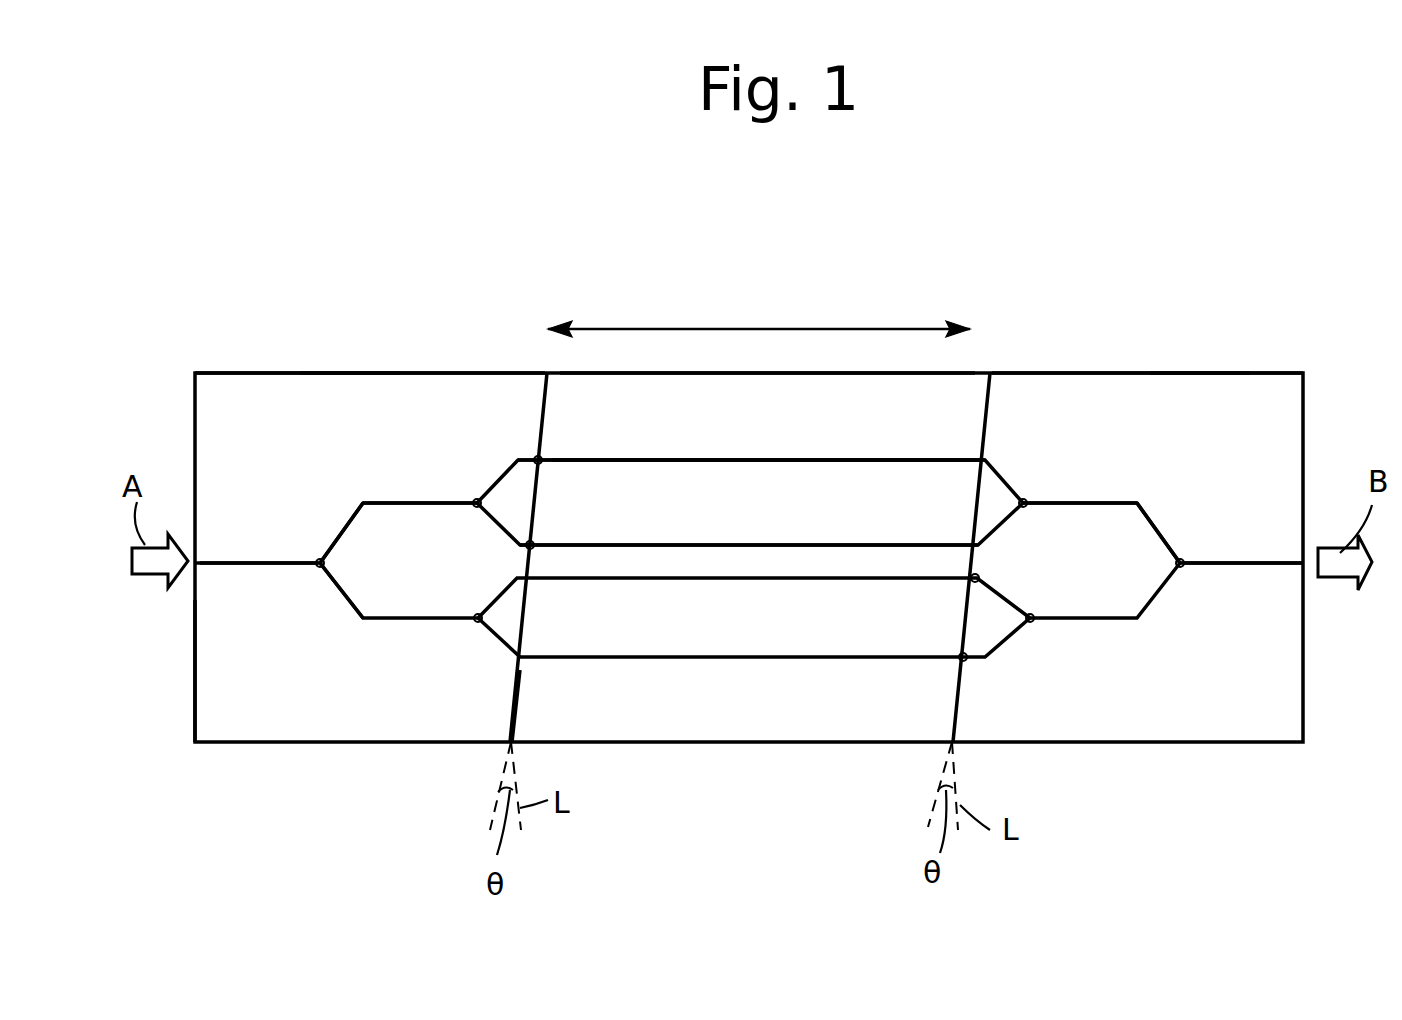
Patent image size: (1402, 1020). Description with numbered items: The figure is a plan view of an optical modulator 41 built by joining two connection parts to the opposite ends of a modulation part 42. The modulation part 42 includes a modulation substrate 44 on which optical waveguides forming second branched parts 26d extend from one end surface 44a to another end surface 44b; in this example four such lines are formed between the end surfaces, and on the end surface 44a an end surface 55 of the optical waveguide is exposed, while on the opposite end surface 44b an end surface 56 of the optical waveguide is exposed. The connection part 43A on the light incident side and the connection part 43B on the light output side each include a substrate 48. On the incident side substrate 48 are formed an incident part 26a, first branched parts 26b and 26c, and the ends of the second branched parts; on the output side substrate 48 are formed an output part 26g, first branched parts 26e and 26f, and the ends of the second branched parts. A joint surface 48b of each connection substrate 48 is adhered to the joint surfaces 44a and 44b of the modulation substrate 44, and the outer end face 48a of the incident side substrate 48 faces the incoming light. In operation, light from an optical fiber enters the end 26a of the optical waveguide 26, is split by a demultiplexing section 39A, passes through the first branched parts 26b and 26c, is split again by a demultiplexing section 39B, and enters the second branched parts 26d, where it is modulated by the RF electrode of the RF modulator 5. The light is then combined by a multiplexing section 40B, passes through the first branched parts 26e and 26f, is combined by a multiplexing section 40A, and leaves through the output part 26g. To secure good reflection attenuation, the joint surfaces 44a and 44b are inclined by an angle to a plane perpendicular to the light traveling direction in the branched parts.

The RF modulator 5 is at (860, 328).
The optical waveguide 26 is at (308, 530).
The incident part 26a is at (243, 560).
The first branched part 26b is at (344, 527).
The first branched part 26c is at (407, 500).
The second branched parts 26d is at (757, 545).
The first branched part 26e is at (1095, 500).
The first branched part 26f is at (1160, 525).
The output part 26g is at (1240, 560).
The demultiplexing section 39A is at (320, 565).
The demultiplexing section 39B is at (474, 500).
The multiplexing section 40A is at (1183, 565).
The multiplexing section 40B is at (1027, 497).
The optical modulator 41 is at (1275, 352).
The modulation part 42 is at (780, 358).
The connection part 43A is at (287, 368).
The connection part 43B is at (1148, 358).
The modulation substrate 44 is at (672, 390).
The end surface 44a is at (535, 372).
The end surface 44b is at (990, 397).
The substrate 48 is at (350, 385).
The input end face 48a is at (190, 688).
The joint surface 48b is at (515, 697).
The end surface of the optical waveguide 55 is at (537, 458).
The end surface of the optical waveguide 56 is at (975, 580).